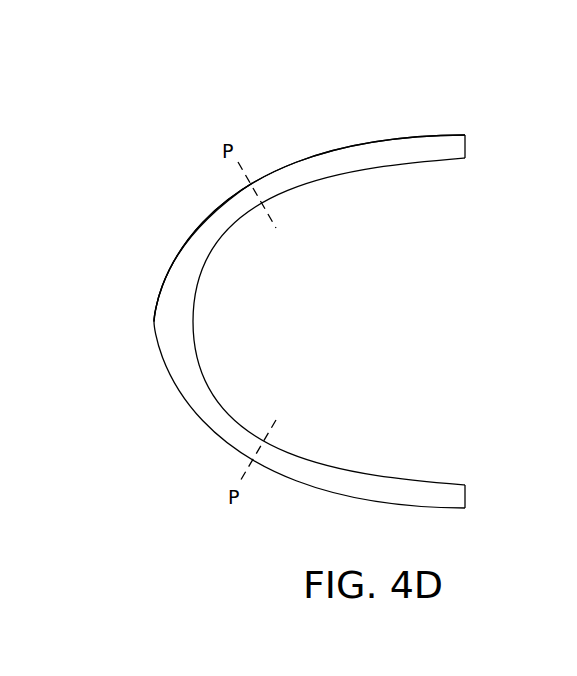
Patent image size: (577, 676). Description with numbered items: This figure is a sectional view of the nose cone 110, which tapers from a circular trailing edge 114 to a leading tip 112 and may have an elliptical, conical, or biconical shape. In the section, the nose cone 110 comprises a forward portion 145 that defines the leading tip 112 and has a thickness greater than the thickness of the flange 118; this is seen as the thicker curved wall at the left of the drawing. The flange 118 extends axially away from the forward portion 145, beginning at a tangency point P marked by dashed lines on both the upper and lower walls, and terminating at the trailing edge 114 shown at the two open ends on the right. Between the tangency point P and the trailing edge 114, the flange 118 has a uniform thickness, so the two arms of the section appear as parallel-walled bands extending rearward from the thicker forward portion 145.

The nose cone 110 is at (280, 100).
The leading tip 112 is at (153, 318).
The trailing edge 114 is at (465, 146).
The flange 118 is at (362, 149).
The forward portion 145 is at (177, 267).